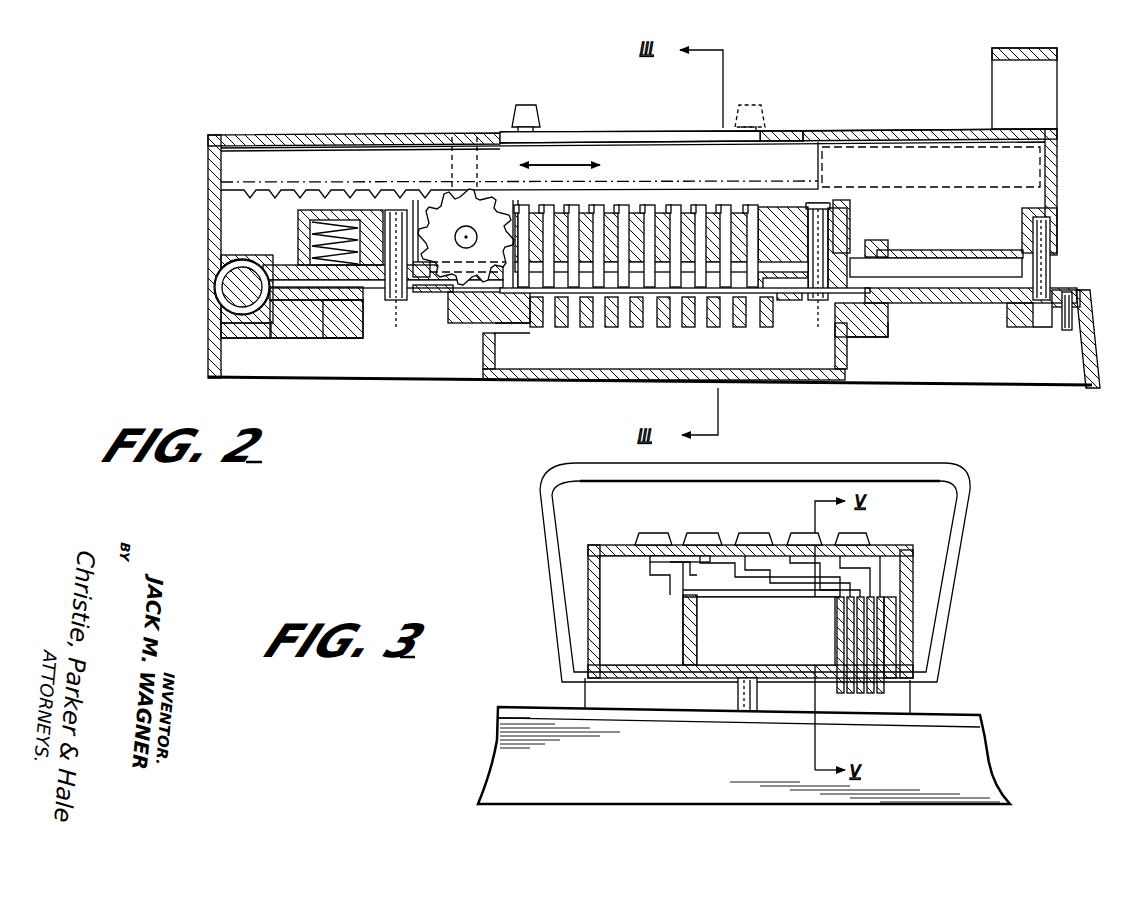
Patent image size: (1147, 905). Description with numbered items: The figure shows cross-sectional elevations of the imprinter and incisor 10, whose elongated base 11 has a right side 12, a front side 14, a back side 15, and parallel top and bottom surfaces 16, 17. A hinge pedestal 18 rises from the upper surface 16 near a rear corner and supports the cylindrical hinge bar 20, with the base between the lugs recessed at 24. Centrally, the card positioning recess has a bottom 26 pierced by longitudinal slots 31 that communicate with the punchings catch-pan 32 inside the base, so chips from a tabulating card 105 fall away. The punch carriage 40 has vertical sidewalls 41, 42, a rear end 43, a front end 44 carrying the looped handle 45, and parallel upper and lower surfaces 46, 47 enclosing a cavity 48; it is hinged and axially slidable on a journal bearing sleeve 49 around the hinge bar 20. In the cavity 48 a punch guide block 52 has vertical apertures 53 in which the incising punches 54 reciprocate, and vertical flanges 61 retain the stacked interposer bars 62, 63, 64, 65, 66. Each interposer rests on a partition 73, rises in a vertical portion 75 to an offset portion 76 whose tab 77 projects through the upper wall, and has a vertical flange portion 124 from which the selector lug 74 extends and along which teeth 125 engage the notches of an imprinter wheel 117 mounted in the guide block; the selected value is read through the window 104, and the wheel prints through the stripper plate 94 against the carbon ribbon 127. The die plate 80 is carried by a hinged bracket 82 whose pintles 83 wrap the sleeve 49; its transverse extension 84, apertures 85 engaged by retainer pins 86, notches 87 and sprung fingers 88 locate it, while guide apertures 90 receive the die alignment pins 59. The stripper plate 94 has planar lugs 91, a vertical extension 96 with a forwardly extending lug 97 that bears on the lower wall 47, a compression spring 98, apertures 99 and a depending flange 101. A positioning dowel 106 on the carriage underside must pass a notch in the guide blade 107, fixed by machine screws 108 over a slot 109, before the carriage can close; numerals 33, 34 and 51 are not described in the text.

In FIG. 2, the imprinter and incisor 10 is at (692, 106).
In FIG. 3, the imprinter and incisor 10 is at (952, 663).
In FIG. 3, the base 11 is at (1010, 800).
In FIG. 2, the right side 12 is at (640, 182).
In FIG. 3, the right side 12 is at (760, 598).
In FIG. 2, the front side 14 is at (523, 190).
In FIG. 3, the front side 14 is at (744, 755).
In FIG. 2, the back side 15 is at (208, 360).
In FIG. 2, the top surface 16 is at (980, 290).
In FIG. 3, the top surface 16 is at (520, 707).
In FIG. 2, the bottom surface 17 is at (886, 385).
In FIG. 3, the bottom surface 17 is at (478, 804).
In FIG. 2, the hinge pedestal 18 is at (524, 106).
In FIG. 3, the hinge pedestal 18 is at (650, 533).
In FIG. 2, the hinge bar 20 is at (210, 288).
In FIG. 2, the recess 24 is at (304, 330).
In FIG. 2, the base of recess 26 is at (530, 333).
In FIG. 2, the slots 31 is at (622, 312).
In FIG. 2, the punchings catch-pan 32 is at (650, 382).
In FIG. 2, the slab 33 is at (446, 294).
In FIG. 2, the stop 34 is at (786, 302).
In FIG. 2, the punch carriage 40 is at (332, 128).
In FIG. 3, the vertical sidewall 41 is at (588, 578).
In FIG. 3, the vertical sidewall 42 is at (913, 570).
In FIG. 2, the rear end 43 is at (208, 184).
In FIG. 2, the front end 44 is at (1058, 165).
In FIG. 2, the looped handle 45 is at (992, 54).
In FIG. 3, the looped handle 45 is at (808, 452).
In FIG. 2, the upper surface 46 is at (878, 131).
In FIG. 3, the upper surface 46 is at (598, 545).
In FIG. 2, the lower surface 47 is at (940, 250).
In FIG. 3, the lower surface 47 is at (648, 672).
In FIG. 2, the cavity 48 is at (931, 167).
In FIG. 3, the cavity 48 is at (641, 610).
In FIG. 2, the journal bearing sleeve 49 is at (218, 304).
In FIG. 2, the contact fingers 51 is at (640, 205).
In FIG. 2, the punch guide block 52 is at (848, 215).
In FIG. 3, the punch guide block 52 is at (838, 652).
In FIG. 2, the apertures 53 is at (752, 205).
In FIG. 2, the incising punch 54 is at (672, 205).
In FIG. 3, the incising punch 54 is at (884, 690).
In FIG. 2, the die alignment pins 59 is at (392, 300).
In FIG. 2, the vertical flange 61 is at (607, 133).
In FIG. 3, the vertical flange 61 is at (896, 610).
In FIG. 2, the interposer bar 62 is at (645, 147).
In FIG. 3, the interposer bar 62 is at (675, 577).
In FIG. 3, the interposer bar 63 is at (720, 597).
In FIG. 3, the interposer bar 64 is at (768, 580).
In FIG. 3, the interposer bar 65 is at (880, 570).
In FIG. 3, the interposer bar 66 is at (880, 558).
In FIG. 3, the partition 73 is at (683, 640).
In FIG. 3, the tab portion 74 is at (838, 606).
In FIG. 2, the vertical portion 75 is at (519, 170).
In FIG. 3, the vertical portion 75 is at (683, 600).
In FIG. 2, the offset horizontal portion 76 is at (372, 150).
In FIG. 3, the offset horizontal portion 76 is at (655, 563).
In FIG. 2, the upwardly extending tab 77 is at (548, 133).
In FIG. 3, the upwardly extending tab 77 is at (668, 545).
In FIG. 2, the die plate 80 is at (780, 300).
In FIG. 2, the hinged bracket 82 is at (272, 335).
In FIG. 2, the pintles 83 is at (220, 270).
In FIG. 2, the transverse extension portion 84 is at (298, 262).
In FIG. 2, the apertures 85 is at (350, 322).
In FIG. 2, the retainer pins 86 is at (330, 330).
In FIG. 2, the notches 87 is at (302, 295).
In FIG. 2, the fingers 88 is at (270, 265).
In FIG. 2, the guide apertures 90 is at (413, 278).
In FIG. 2, the planar lugs 91 is at (888, 318).
In FIG. 2, the stripper plate 94 is at (880, 274).
In FIG. 2, the vertical extension 96 is at (860, 245).
In FIG. 2, the forwardly extending lug 97 is at (888, 245).
In FIG. 2, the compression spring 98 is at (298, 222).
In FIG. 2, the apertures 99 is at (810, 290).
In FIG. 2, the depending flange 101 is at (512, 325).
In FIG. 2, the rectangular aperture 104 is at (798, 131).
In FIG. 2, the tabulating card 105 is at (678, 296).
In FIG. 2, the positioning dowel 106 is at (1052, 272).
In FIG. 3, the positioning dowel 106 is at (738, 692).
In FIG. 2, the guide blade 107 is at (1080, 292).
In FIG. 3, the guide blade 107 is at (510, 720).
In FIG. 2, the machine screws 108 is at (1066, 332).
In FIG. 2, the slot 109 is at (1030, 327).
In FIG. 2, the imprinter wheel 117 is at (440, 205).
In FIG. 2, the vertical flange portion 124 is at (290, 190).
In FIG. 2, the teeth 125 is at (340, 192).
In FIG. 2, the carbon ribbon 127 is at (460, 134).